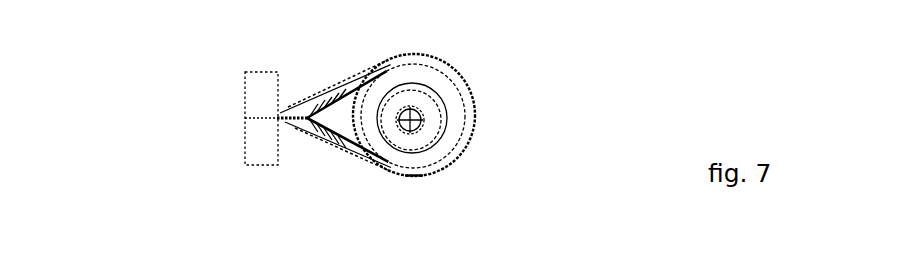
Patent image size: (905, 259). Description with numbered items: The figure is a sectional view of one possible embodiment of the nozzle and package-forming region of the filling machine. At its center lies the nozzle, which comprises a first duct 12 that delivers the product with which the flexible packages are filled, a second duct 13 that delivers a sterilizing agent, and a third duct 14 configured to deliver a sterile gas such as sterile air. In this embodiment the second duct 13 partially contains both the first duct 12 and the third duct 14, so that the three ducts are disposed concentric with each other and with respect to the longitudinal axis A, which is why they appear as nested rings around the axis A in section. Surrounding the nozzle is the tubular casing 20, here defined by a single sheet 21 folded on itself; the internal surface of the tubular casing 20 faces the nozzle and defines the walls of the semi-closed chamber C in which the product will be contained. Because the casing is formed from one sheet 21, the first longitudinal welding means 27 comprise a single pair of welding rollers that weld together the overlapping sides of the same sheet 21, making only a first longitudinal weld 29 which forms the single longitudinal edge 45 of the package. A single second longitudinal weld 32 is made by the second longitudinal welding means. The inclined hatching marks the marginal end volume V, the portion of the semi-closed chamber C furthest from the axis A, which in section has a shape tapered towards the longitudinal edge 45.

The first duct 12 is at (424, 120).
The second duct 13 is at (452, 148).
The third duct 14 is at (425, 88).
The tubular casing 20 is at (467, 85).
The sheet 21 is at (352, 83).
The first longitudinal welding means 27 is at (245, 72).
The first longitudinal weld 29 is at (246, 118).
The second longitudinal weld 32 is at (290, 127).
The longitudinal edge 45 is at (300, 115).
The longitudinal axis A is at (402, 104).
The semi-closed chamber C is at (417, 176).
The marginal end volume V is at (325, 143).